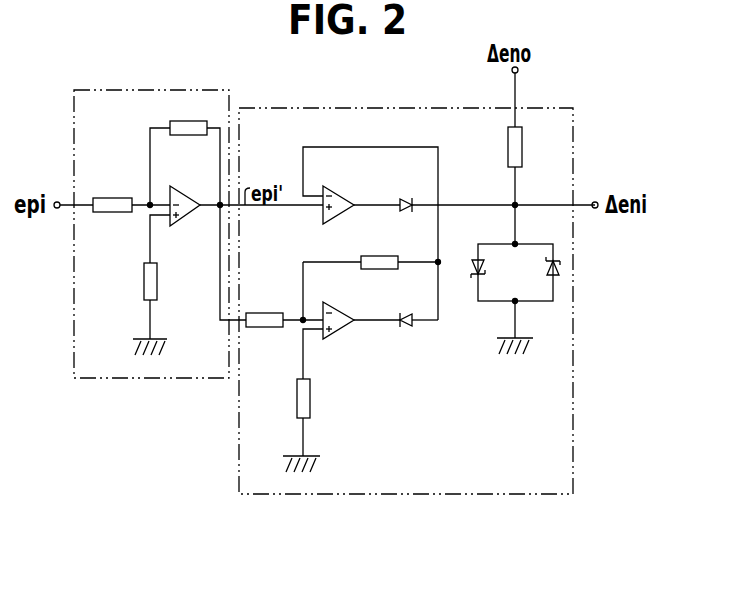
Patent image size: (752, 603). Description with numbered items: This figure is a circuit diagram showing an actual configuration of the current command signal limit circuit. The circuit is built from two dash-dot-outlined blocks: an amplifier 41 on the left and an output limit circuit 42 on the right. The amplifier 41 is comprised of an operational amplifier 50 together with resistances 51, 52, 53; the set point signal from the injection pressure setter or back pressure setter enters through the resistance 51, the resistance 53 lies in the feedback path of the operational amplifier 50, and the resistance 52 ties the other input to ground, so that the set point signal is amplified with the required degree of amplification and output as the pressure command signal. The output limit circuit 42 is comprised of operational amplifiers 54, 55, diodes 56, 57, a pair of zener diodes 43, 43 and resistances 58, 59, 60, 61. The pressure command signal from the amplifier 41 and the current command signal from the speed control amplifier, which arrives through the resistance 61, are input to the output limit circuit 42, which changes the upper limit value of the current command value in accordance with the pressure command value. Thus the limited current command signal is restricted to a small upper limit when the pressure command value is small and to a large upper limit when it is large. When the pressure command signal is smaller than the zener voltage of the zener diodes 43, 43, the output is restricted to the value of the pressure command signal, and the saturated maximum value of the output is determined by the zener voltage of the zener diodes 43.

The amplifier 41 is at (128, 378).
The output limit circuit 42 is at (422, 494).
The zener diodes 43 is at (477, 277).
The operational amplifier 50 is at (187, 218).
The resistance 51 is at (112, 199).
The resistance 52 is at (157, 283).
The resistance 53 is at (190, 135).
The operational amplifier 54 is at (345, 212).
The operational amplifier 55 is at (340, 331).
The diode 56 is at (407, 199).
The diode 57 is at (410, 327).
The resistance 58 is at (270, 327).
The resistance 59 is at (310, 405).
The resistance 60 is at (383, 269).
The resistance 61 is at (522, 147).